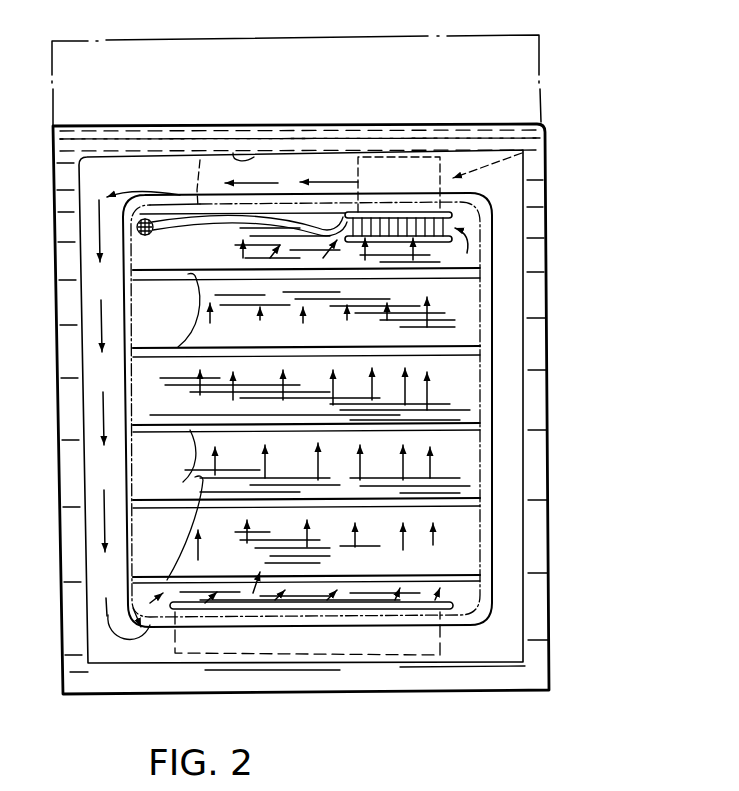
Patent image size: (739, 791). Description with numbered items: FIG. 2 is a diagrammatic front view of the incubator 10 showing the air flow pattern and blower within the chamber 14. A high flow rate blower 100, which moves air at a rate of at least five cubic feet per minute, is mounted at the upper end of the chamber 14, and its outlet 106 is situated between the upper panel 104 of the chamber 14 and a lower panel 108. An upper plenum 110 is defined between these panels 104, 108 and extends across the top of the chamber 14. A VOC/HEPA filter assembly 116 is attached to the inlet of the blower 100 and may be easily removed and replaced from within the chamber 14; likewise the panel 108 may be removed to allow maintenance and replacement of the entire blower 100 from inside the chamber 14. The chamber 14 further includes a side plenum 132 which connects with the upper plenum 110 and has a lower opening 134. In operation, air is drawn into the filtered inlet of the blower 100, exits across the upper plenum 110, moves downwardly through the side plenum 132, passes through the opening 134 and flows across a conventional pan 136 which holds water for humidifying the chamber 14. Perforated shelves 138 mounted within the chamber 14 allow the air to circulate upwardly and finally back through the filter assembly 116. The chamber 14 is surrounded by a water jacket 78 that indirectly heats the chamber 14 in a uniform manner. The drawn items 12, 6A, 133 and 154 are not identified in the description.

The incubator 10 is at (400, 708).
The inner liner 12 is at (553, 324).
The chamber 14 is at (268, 400).
The tub wall 6A is at (492, 266).
The water jacket 78 is at (378, 128).
The blower 100 is at (522, 153).
The upper panel 104 is at (233, 153).
The outlet 106 is at (358, 173).
The panel 108 is at (200, 160).
The upper plenum 110 is at (172, 167).
The VOC/HEPA filter assembly 116 is at (450, 222).
The side plenum 132 is at (93, 228).
The drain 133 is at (113, 618).
The lower opening 134 is at (135, 655).
The pan 136 is at (447, 615).
The shelves 138 is at (175, 427).
The spray nozzle 154 is at (148, 236).